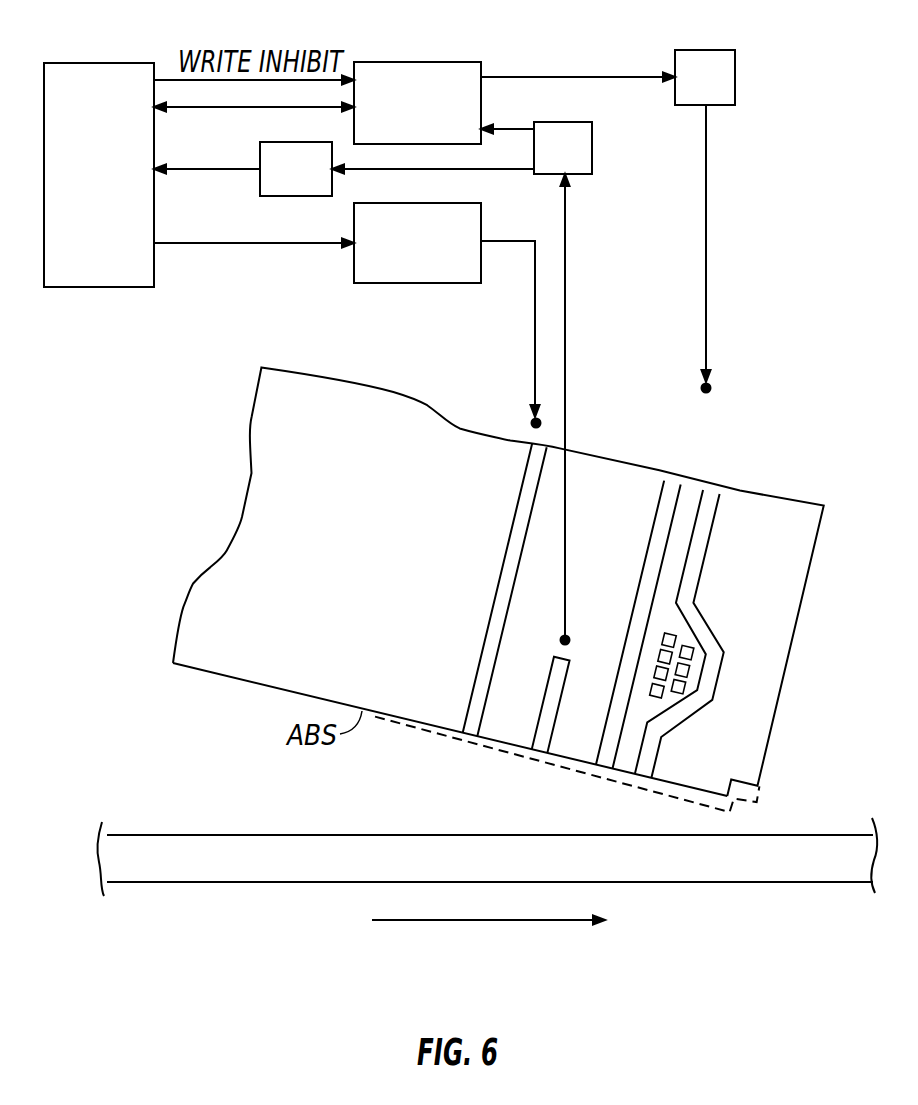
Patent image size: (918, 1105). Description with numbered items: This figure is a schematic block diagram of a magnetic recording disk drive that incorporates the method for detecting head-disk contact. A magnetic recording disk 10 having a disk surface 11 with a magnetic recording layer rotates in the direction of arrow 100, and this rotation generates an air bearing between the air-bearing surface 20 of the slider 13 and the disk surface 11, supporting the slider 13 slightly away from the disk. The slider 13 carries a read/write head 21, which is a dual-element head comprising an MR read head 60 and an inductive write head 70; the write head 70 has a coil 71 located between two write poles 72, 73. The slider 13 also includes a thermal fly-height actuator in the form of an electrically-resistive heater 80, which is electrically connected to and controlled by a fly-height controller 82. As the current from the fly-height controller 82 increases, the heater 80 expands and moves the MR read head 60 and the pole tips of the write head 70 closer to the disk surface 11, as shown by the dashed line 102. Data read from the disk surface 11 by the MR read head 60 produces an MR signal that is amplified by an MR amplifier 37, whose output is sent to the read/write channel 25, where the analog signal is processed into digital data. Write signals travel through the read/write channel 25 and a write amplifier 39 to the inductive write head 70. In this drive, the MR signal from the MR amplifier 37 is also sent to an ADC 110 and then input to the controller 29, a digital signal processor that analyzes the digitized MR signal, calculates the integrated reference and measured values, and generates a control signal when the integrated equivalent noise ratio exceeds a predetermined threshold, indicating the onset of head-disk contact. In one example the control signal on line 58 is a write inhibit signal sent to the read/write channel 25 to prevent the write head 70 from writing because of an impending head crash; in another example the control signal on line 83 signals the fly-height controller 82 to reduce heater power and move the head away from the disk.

The magnetic recording disk 10 is at (488, 859).
The disk surface 11 is at (237, 834).
The slider 13 is at (498, 579).
The air-bearing surface 20 is at (273, 689).
The read/write head 21 is at (725, 431).
The read/write channel 25 is at (455, 62).
The controller 29 is at (99, 175).
The MR amplifier 37 is at (462, 383).
The write amplifier 39 is at (608, 221).
The write inhibit signal line 58 is at (172, 77).
The MR read head 60 is at (553, 690).
The write head 70 is at (657, 636).
The coil 71 is at (690, 656).
The write pole 72 is at (602, 774).
The write pole 73 is at (643, 790).
The heater 80 is at (502, 560).
The fly-height controller 82 is at (380, 284).
The FHC control line 83 is at (273, 242).
The disk rotation direction arrow 100 is at (432, 921).
The dashed line 102 is at (552, 768).
The ADC 110 is at (260, 154).